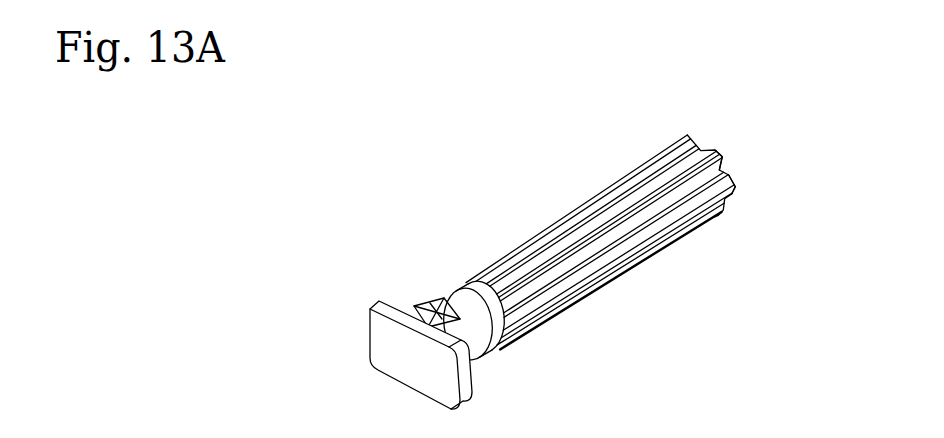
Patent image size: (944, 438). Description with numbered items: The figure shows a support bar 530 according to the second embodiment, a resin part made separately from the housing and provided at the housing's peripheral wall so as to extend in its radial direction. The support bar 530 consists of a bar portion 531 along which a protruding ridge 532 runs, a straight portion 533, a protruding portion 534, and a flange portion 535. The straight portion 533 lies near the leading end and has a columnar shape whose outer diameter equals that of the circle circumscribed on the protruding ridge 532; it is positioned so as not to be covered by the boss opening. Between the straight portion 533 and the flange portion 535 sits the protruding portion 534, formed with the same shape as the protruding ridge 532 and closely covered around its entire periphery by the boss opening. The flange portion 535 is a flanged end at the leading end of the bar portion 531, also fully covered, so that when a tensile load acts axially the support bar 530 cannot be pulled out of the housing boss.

The support bar 530 is at (648, 162).
The bar portion 531 is at (725, 172).
The protruding ridge 532 is at (694, 203).
The straight portion 533 is at (452, 295).
The protruding portion 534 is at (426, 301).
The flange portion 535 is at (474, 384).